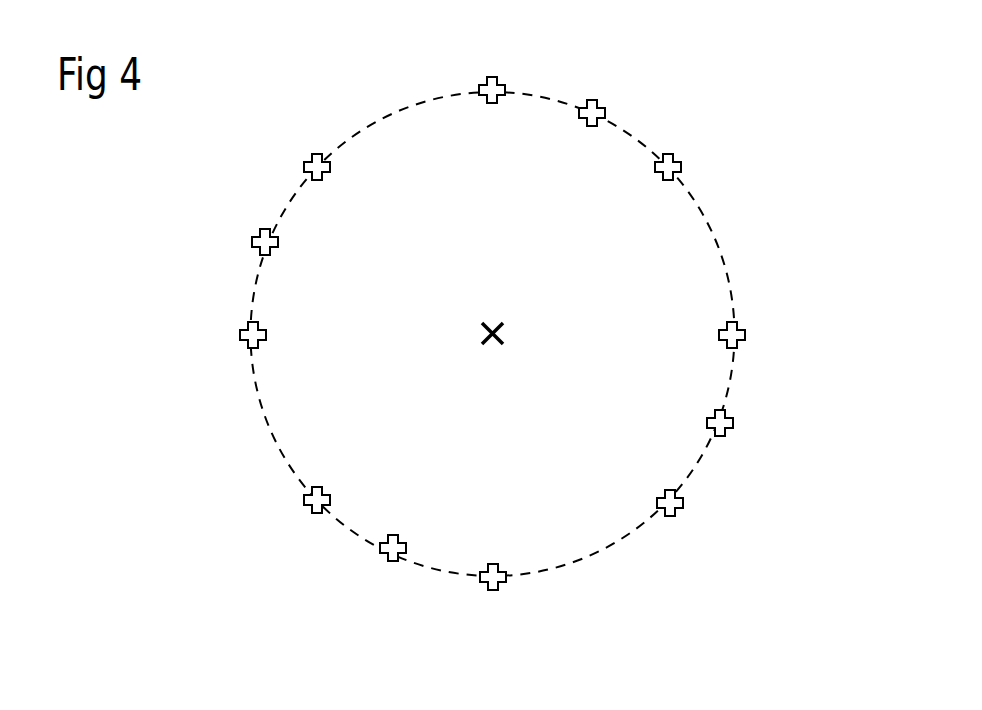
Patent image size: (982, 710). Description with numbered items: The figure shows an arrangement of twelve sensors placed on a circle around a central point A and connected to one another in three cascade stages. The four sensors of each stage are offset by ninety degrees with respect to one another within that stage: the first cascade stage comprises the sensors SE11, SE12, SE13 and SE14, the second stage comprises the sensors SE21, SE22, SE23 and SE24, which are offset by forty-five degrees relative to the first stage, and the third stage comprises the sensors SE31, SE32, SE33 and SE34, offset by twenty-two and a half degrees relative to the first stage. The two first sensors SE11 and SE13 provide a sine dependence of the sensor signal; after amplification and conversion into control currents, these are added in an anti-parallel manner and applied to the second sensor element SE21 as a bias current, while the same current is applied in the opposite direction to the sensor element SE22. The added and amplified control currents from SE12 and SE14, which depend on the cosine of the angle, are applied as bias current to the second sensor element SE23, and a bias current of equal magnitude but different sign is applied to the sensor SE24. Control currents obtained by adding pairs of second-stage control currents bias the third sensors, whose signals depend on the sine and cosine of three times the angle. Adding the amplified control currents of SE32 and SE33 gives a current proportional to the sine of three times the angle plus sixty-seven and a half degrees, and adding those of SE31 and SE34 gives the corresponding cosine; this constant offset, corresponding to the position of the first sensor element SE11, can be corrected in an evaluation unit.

The axis of rotation A is at (495, 318).
The first sensor element SE11 is at (490, 77).
The first sensor SE12 is at (747, 335).
The first sensor SE13 is at (494, 591).
The first sensor SE14 is at (239, 335).
The second sensor element SE21 is at (681, 155).
The sensor element SE22 is at (684, 510).
The second sensor element SE23 is at (308, 514).
The sensor SE24 is at (304, 156).
The third sensor SE31 is at (597, 100).
The third sensor SE32 is at (735, 426).
The third sensor SE33 is at (385, 562).
The third sensor SE34 is at (254, 236).